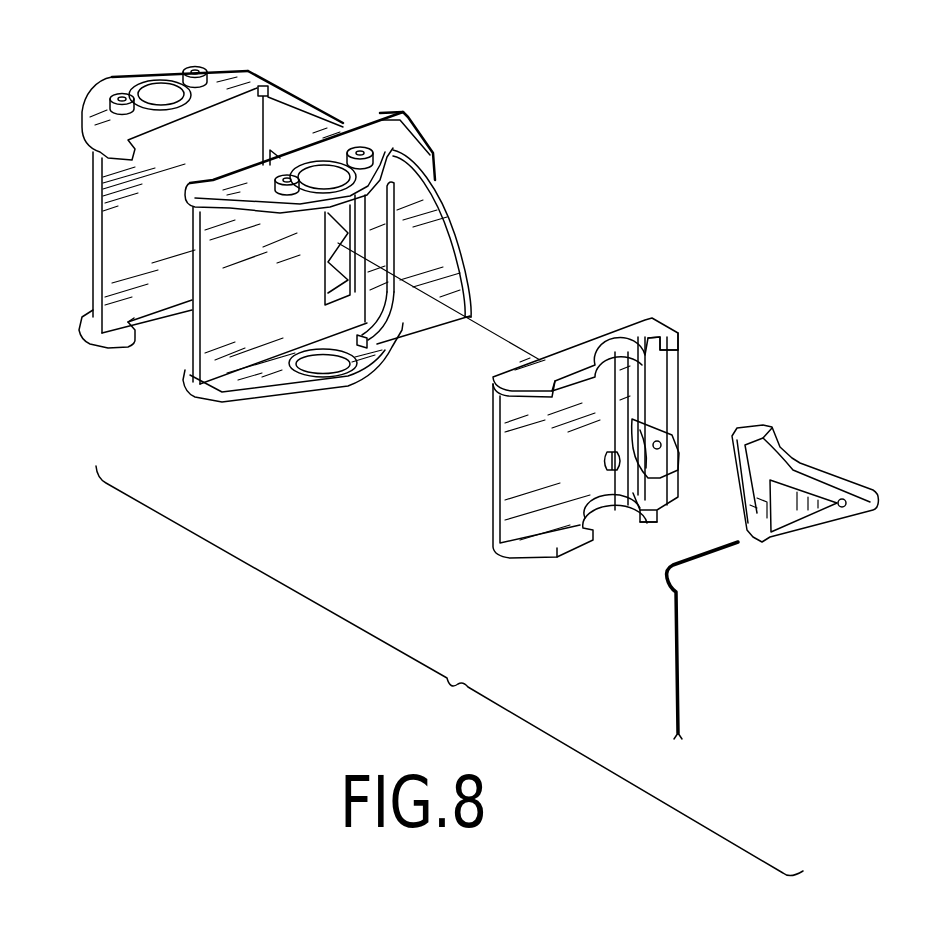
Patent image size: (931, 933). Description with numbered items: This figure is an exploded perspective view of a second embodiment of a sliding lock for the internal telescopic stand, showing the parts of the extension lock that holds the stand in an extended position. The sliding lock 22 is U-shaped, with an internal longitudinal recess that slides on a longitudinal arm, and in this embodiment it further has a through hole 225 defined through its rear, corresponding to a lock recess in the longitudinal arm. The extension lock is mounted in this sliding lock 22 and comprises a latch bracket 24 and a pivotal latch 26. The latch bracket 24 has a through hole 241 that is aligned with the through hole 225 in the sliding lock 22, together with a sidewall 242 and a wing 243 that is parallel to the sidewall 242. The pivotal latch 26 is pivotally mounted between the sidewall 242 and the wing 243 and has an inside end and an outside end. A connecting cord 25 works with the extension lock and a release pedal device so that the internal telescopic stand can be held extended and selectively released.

The sliding lock 22 is at (220, 80).
The through hole 225 is at (338, 243).
The latch bracket 24 is at (635, 328).
The through hole 241 is at (643, 378).
The sidewall 242 is at (675, 430).
The wing 243 is at (633, 420).
The connecting cord 25 is at (678, 685).
The pivotal latch 26 is at (812, 473).